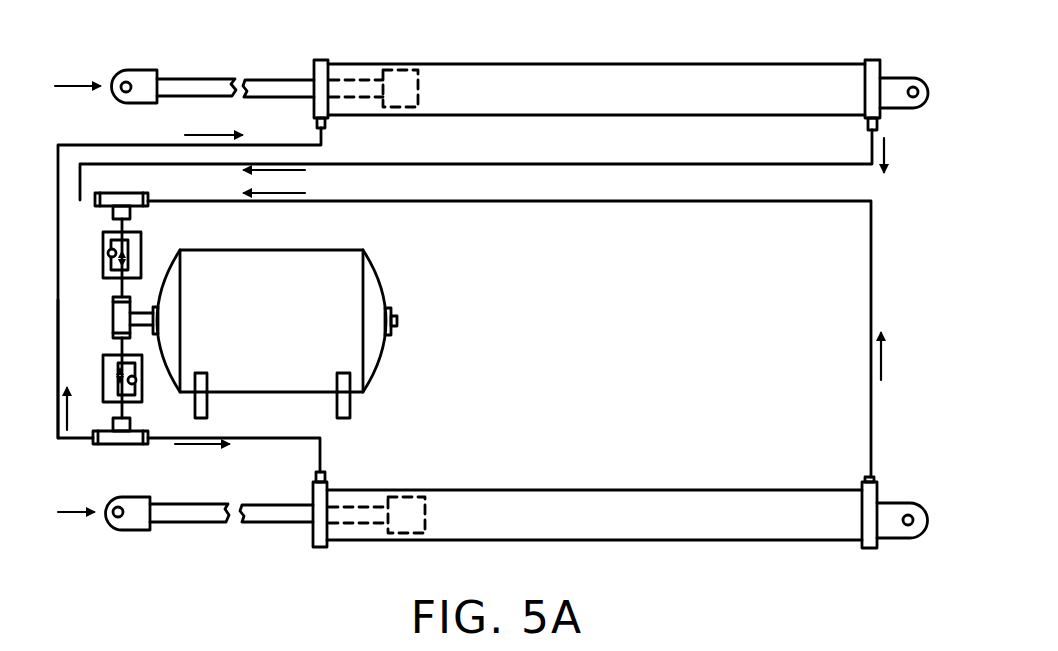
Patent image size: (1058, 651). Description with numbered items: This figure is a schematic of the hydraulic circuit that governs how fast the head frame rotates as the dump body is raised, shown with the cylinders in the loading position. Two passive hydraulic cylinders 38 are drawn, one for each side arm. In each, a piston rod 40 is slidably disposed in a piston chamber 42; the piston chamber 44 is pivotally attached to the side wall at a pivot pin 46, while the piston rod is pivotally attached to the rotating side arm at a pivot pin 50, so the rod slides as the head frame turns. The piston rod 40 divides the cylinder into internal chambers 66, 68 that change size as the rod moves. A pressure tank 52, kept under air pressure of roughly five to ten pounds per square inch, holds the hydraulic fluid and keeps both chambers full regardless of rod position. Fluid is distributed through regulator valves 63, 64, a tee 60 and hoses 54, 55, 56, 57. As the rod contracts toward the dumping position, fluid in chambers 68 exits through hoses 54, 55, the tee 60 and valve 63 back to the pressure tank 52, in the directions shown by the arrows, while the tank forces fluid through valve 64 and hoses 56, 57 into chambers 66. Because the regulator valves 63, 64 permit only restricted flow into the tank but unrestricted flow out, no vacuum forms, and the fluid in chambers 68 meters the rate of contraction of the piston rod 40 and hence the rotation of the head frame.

The hydraulic cylinder 38 is at (553, 49).
The piston rod 40 is at (280, 85).
The piston chamber 42 is at (712, 63).
The piston chamber 44 is at (848, 60).
The pivot pin 46 is at (912, 80).
The pivot pin 50 is at (129, 86).
The pressure tank 52 is at (300, 337).
The hose 54 is at (708, 200).
The hose 55 is at (846, 170).
The hose 56 is at (60, 328).
The hose 57 is at (323, 450).
The tee 60 is at (138, 199).
The regulator valve 63 is at (145, 252).
The regulator valve 64 is at (148, 388).
The internal chamber 66 is at (368, 68).
The internal chamber 68 is at (470, 80).